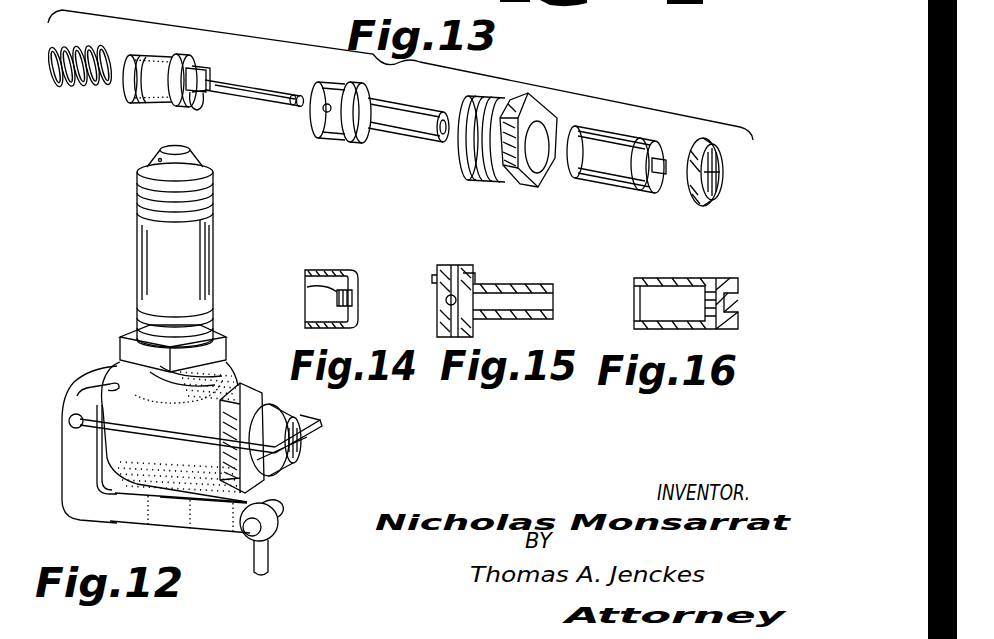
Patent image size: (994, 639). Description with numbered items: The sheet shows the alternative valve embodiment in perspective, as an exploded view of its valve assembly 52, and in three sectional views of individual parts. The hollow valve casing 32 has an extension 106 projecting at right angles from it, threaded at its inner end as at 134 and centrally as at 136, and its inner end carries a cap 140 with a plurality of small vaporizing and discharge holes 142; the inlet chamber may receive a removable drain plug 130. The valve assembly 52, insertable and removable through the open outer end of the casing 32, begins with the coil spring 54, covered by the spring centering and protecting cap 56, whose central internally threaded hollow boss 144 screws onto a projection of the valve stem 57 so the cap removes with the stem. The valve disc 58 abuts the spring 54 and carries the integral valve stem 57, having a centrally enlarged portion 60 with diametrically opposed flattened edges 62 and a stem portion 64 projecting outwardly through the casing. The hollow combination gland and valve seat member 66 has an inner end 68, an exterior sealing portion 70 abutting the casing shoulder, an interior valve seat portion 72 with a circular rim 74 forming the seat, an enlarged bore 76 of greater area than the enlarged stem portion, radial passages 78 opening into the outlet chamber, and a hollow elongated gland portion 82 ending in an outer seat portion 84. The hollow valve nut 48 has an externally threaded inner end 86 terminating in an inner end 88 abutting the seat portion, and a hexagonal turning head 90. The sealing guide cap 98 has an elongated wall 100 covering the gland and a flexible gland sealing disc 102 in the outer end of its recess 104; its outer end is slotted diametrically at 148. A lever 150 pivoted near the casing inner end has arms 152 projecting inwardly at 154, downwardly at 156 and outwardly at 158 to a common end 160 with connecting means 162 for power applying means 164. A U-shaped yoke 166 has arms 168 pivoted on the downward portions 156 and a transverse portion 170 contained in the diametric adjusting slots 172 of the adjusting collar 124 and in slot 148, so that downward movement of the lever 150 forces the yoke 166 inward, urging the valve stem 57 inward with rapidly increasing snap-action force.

In FIG. 12, the hollow valve casing 32 is at (232, 386).
In FIG. 13, the hollow valve nut 48 is at (540, 155).
In FIG. 13, the valve assembly 52 is at (458, 196).
In FIG. 13, the coil spring 54 is at (78, 86).
In FIG. 13, the spring centering and protecting cap 56 is at (140, 93).
In FIG. 14, the spring centering and protecting cap 56 is at (309, 283).
In FIG. 13, the valve stem 57 is at (252, 90).
In FIG. 13, the valve disc 58 is at (190, 70).
In FIG. 13, the centrally enlarged portion 60 is at (211, 80).
In FIG. 13, the flattened edges 62 is at (191, 97).
In FIG. 13, the stem portion 64 is at (299, 100).
In FIG. 13, the combination gland and valve seat member 66 is at (412, 138).
In FIG. 13, the inner end 68 is at (358, 143).
In FIG. 15, the inner end 68 is at (440, 330).
In FIG. 13, the exterior sealing portion 70 is at (309, 123).
In FIG. 15, the exterior sealing portion 70 is at (450, 298).
In FIG. 15, the interior valve seat portion 72 is at (437, 276).
In FIG. 15, the circular rim 74 is at (447, 318).
In FIG. 15, the enlarged bore 76 is at (470, 280).
In FIG. 13, the radial passages 78 is at (323, 112).
In FIG. 15, the radial passages 78 is at (445, 300).
In FIG. 13, the hollow elongated gland portion 82 is at (420, 104).
In FIG. 15, the hollow elongated gland portion 82 is at (538, 276).
In FIG. 13, the outer seat portion 84 is at (445, 115).
In FIG. 13, the externally threaded inner end 86 is at (478, 172).
In FIG. 13, the inner end 88 is at (466, 150).
In FIG. 13, the turning head 90 is at (537, 181).
In FIG. 13, the sealing guide cap 98 is at (601, 140).
In FIG. 13, the elongated wall 100 is at (616, 166).
In FIG. 16, the elongated wall 100 is at (712, 302).
In FIG. 16, the gland sealing disc 102 is at (717, 280).
In FIG. 16, the recess 104 is at (700, 326).
In FIG. 12, the extension 106 is at (171, 235).
In FIG. 13, the adjusting collar 124 is at (737, 187).
In FIG. 12, the adjusting collar 124 is at (284, 433).
In FIG. 12, the removable drain plug 130 is at (83, 459).
In FIG. 12, the inner end threads 134 is at (120, 183).
In FIG. 12, the central threads 136 is at (138, 317).
In FIG. 12, the cap 140 is at (205, 162).
In FIG. 12, the vaporizing and discharge holes 142 is at (160, 160).
In FIG. 14, the internally threaded hollow boss 144 is at (303, 293).
In FIG. 13, the slot 148 is at (665, 178).
In FIG. 12, the slot 148 is at (295, 426).
In FIG. 16, the slot 148 is at (738, 302).
In FIG. 12, the lever 150 is at (103, 517).
In FIG. 12, the arms 152 is at (66, 457).
In FIG. 12, the inwardly projecting portion 154 is at (83, 383).
In FIG. 12, the downwardly projecting portion 156 is at (68, 478).
In FIG. 12, the outwardly projecting portion 158 is at (180, 534).
In FIG. 12, the common end 160 is at (196, 533).
In FIG. 12, the connecting means 162 is at (280, 508).
In FIG. 12, the power applying means 164 is at (269, 556).
In FIG. 12, the U-shaped yoke 166 is at (323, 423).
In FIG. 12, the yoke arms 168 is at (147, 446).
In FIG. 12, the transverse portion 170 is at (228, 428).
In FIG. 13, the diametric adjusting slots 172 is at (712, 186).
In FIG. 12, the diametric adjusting slots 172 is at (288, 464).